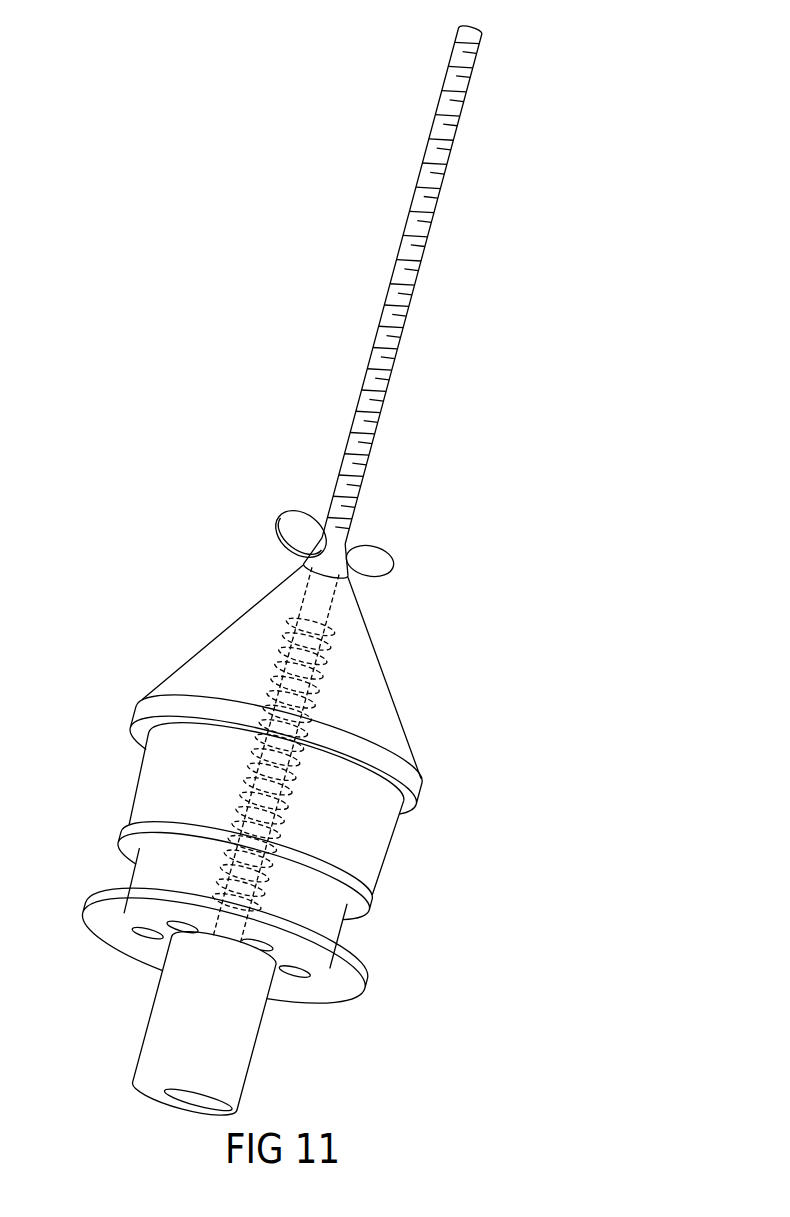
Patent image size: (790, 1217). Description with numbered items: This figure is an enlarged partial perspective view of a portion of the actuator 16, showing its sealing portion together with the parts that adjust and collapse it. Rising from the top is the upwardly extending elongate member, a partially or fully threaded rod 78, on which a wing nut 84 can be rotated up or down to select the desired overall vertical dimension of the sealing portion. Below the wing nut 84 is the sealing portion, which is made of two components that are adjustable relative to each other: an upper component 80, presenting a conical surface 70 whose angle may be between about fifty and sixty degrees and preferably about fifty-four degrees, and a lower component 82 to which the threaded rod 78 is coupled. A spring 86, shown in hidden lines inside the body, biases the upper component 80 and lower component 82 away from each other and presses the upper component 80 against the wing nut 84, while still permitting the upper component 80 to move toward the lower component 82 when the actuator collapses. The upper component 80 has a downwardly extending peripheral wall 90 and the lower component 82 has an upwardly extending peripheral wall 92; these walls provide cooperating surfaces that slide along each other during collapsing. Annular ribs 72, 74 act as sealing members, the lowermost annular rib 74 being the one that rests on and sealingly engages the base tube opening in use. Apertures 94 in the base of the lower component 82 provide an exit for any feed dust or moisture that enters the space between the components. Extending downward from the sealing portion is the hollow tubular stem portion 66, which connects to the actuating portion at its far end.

The actuator 16 is at (225, 375).
The threaded rod 78 is at (415, 282).
The wing nut 84 is at (388, 558).
The spring 86 is at (278, 648).
The upper component 80 is at (396, 667).
The conical surface 70 is at (364, 703).
The annular rib 72 is at (402, 806).
The lower component 82 is at (100, 853).
The peripheral wall 90 is at (157, 778).
The peripheral wall 92 is at (330, 915).
The annular rib 74 is at (355, 958).
The apertures 94 is at (295, 972).
The stem portion 66 is at (157, 1030).